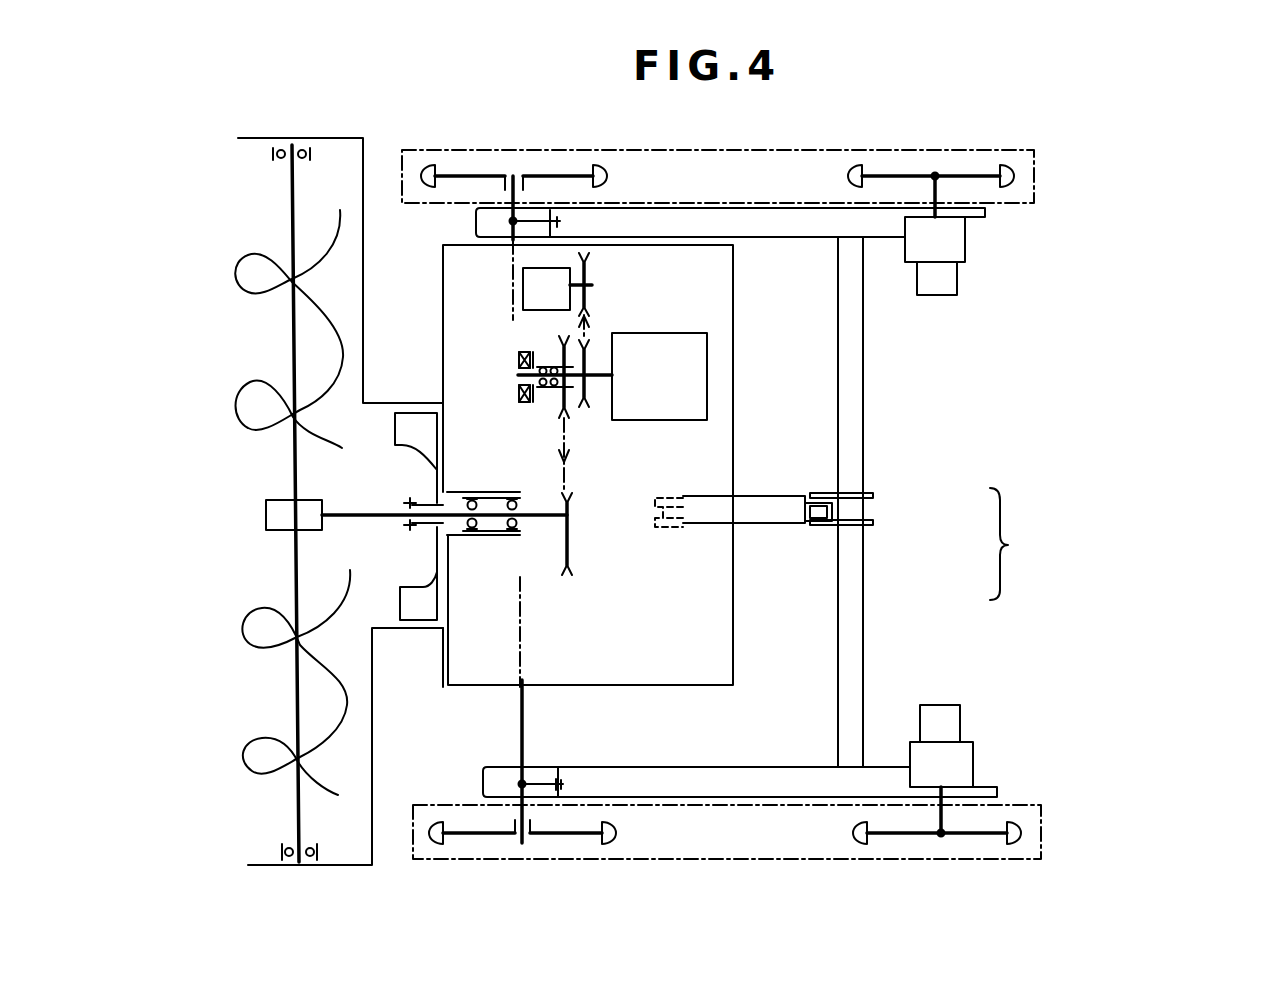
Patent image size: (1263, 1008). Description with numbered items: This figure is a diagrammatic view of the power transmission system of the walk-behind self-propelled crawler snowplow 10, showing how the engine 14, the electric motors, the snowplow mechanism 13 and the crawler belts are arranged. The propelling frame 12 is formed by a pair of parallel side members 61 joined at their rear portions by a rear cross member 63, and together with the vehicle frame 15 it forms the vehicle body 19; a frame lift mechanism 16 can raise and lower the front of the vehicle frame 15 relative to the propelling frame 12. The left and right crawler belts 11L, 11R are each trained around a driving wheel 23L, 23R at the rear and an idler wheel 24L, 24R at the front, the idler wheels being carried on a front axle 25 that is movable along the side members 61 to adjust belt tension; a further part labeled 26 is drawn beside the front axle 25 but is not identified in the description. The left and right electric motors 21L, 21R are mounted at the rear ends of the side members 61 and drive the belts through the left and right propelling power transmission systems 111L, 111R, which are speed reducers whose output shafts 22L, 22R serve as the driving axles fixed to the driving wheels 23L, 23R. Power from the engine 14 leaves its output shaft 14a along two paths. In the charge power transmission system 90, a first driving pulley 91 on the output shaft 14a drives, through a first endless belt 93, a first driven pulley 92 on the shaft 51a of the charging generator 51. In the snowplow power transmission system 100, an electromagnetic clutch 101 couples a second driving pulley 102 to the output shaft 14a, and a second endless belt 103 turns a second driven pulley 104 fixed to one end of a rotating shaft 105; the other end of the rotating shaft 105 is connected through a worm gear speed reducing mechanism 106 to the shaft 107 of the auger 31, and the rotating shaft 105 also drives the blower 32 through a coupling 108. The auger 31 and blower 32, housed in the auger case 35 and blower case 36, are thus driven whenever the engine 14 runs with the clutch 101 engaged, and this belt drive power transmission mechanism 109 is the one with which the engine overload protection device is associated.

The crawler snowplow 10 is at (1176, 240).
The right crawler belt 11R is at (1036, 160).
The left crawler belt 11L is at (1027, 858).
The propelling frame 12 is at (880, 608).
The snowplow mechanism 13 is at (263, 705).
The engine 14 is at (704, 376).
The output shaft 14a is at (597, 370).
The vehicle frame 15 is at (750, 577).
The frame lift mechanism 16 is at (773, 497).
The vehicle body 19 is at (1017, 544).
The right electric motor 21R is at (955, 285).
The left electric motor 21L is at (960, 712).
The right driving axle 22R is at (942, 188).
The left driving axle 22L is at (942, 813).
The right driving wheel 23R is at (888, 172).
The left driving wheel 23L is at (893, 838).
The right idler wheel 24R is at (453, 172).
The left idler wheel 24L is at (475, 838).
The front axle 25 is at (522, 728).
The coupling 26 is at (540, 218).
The auger 31 is at (240, 627).
The blower 32 is at (422, 588).
The auger case 35 is at (347, 868).
The blower case 36 is at (413, 632).
The charging generator 51 is at (523, 285).
The generator shaft 51a is at (590, 283).
The side member 61 is at (788, 226).
The rear cross member 63 is at (860, 675).
The charge power transmission system 90 is at (611, 239).
The first driving pulley 91 is at (588, 385).
The first driven pulley 92 is at (584, 258).
The first endless belt 93 is at (585, 322).
The snowplow power transmission system 100 is at (503, 370).
The electromagnetic clutch 101 is at (518, 388).
The second driving pulley 102 is at (562, 393).
The second endless belt 103 is at (570, 437).
The second driven pulley 104 is at (568, 545).
The rotating shaft 105 is at (543, 518).
The worm gear speed reducing mechanism 106 is at (270, 516).
The auger shaft 107 is at (296, 582).
The coupling 108 is at (412, 503).
The belt drive power transmission mechanism 109 is at (590, 579).
The right propelling power transmission system 111R is at (968, 245).
The left propelling power transmission system 111L is at (968, 762).